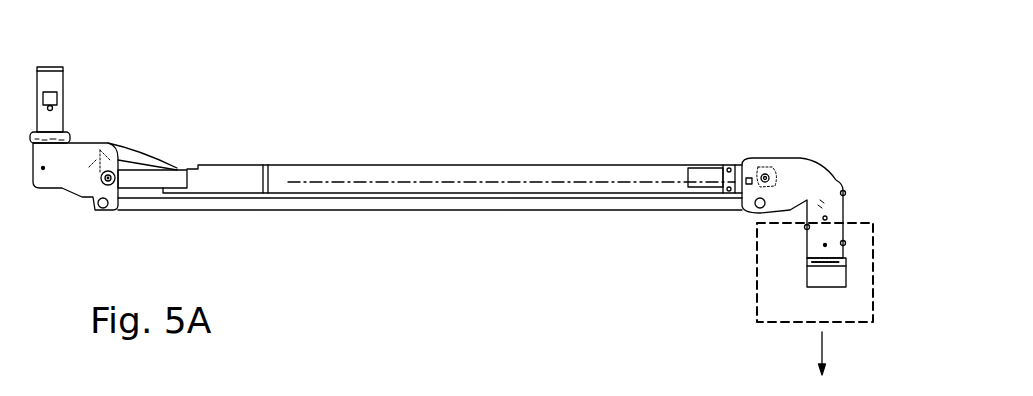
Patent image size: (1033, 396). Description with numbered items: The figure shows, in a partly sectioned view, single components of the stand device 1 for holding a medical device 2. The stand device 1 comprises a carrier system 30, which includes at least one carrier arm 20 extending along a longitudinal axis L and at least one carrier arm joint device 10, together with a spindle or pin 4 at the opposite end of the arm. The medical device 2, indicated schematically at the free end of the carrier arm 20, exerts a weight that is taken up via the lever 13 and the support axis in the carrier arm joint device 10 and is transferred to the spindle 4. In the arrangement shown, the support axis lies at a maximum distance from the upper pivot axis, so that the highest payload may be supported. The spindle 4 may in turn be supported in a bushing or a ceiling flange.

The stand device 1 is at (610, 92).
The medical device 2 is at (752, 325).
The spindle 4 is at (78, 80).
The carrier arm joint device 10 is at (116, 126).
The lever 13 is at (140, 163).
The carrier arm 20 is at (396, 155).
The carrier system 30 is at (370, 106).
The longitudinal axis L is at (522, 183).